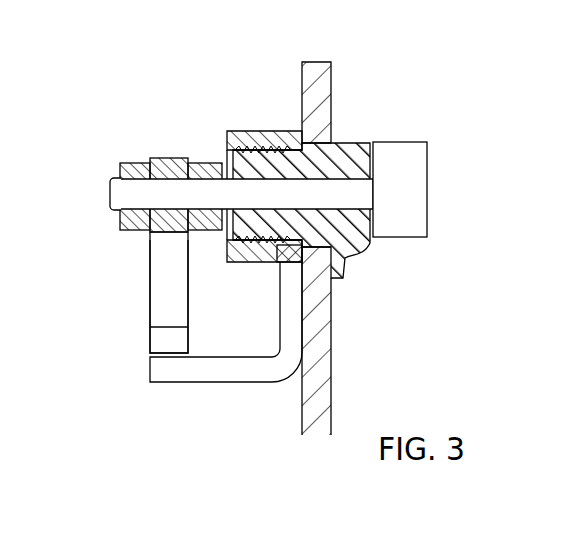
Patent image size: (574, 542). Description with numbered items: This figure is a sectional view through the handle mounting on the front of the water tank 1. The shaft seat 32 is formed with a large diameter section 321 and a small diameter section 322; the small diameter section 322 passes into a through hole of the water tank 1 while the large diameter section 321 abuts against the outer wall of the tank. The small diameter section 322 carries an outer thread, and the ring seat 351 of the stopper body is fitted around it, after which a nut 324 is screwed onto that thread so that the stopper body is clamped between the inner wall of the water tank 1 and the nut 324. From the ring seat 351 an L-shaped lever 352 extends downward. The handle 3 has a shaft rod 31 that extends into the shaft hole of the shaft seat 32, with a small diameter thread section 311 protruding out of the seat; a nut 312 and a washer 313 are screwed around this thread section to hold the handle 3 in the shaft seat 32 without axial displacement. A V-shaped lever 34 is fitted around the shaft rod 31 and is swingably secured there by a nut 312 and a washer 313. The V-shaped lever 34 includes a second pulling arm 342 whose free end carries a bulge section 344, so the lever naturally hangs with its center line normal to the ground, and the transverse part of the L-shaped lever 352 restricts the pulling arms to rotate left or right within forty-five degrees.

The water tank 1 is at (332, 322).
The handle 3 is at (413, 150).
The shaft rod 31 is at (368, 210).
The small diameter thread section 311 is at (110, 196).
The nut 312 is at (122, 163).
The washer 313 is at (190, 163).
The shaft seat 32 is at (348, 143).
The large diameter section 321 is at (328, 135).
The small diameter section 322 is at (302, 125).
The nut 324 is at (253, 124).
The V-shaped lever 34 is at (150, 232).
The second pulling arm 342 is at (152, 280).
The bulge section 344 is at (150, 342).
The ring seat 351 is at (292, 140).
The L-shaped lever 352 is at (222, 372).